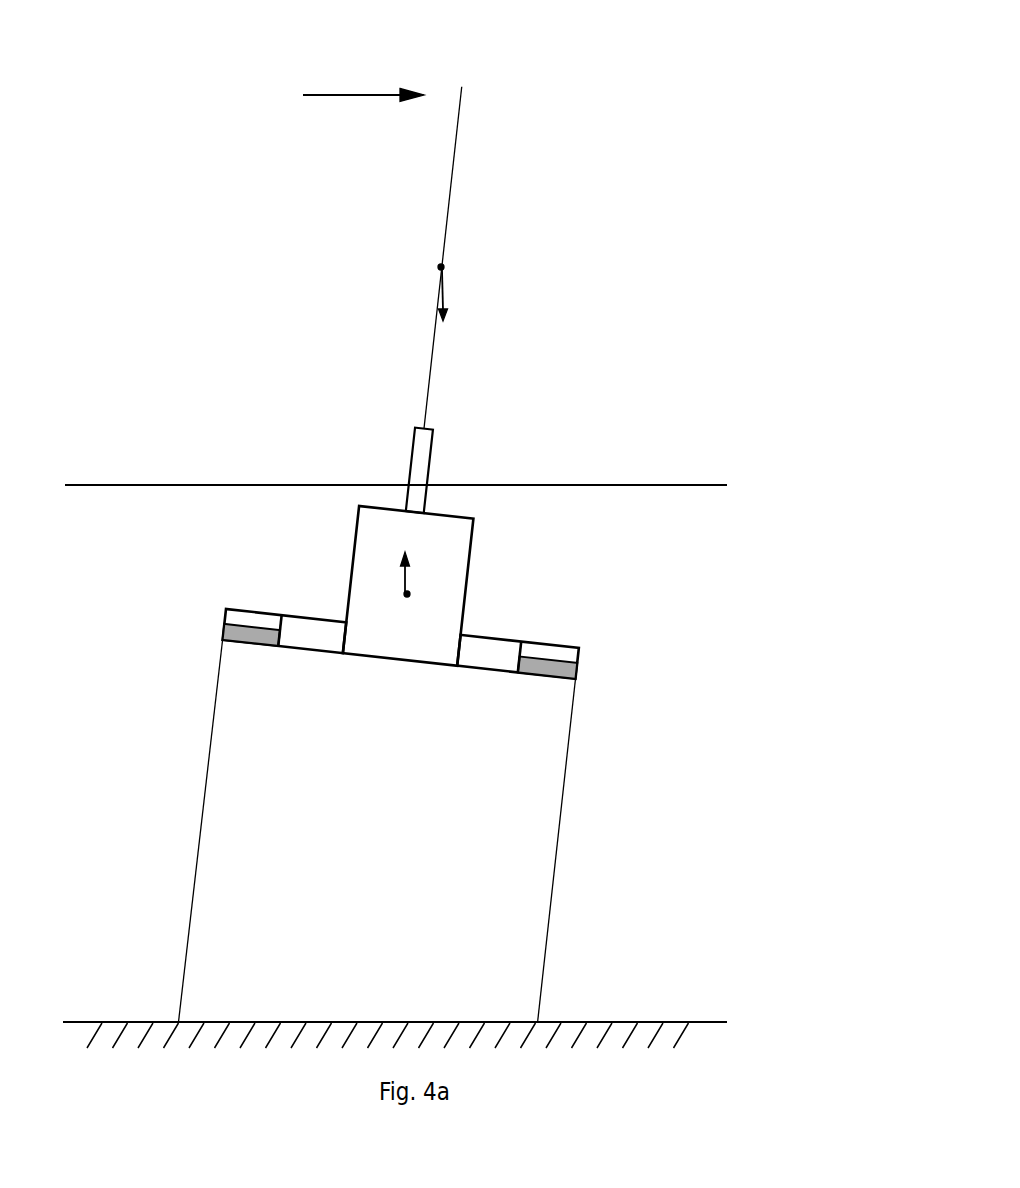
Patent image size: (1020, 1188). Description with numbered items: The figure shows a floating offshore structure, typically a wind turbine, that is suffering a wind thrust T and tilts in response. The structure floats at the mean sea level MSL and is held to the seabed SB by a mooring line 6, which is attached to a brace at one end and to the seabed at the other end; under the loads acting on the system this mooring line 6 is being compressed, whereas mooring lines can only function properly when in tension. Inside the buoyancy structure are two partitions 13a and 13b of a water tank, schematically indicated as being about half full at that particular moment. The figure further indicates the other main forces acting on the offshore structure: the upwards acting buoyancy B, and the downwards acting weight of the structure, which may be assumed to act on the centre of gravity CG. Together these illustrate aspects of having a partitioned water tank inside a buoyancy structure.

The partition of water tank 13a is at (247, 622).
The partition of water tank 13b is at (555, 658).
The mooring line 6 is at (570, 763).
The buoyancy B is at (432, 373).
The centre of gravity CG is at (469, 278).
The wind thrust T is at (359, 74).
The mean sea level MSL is at (440, 481).
The seabed SB is at (433, 1019).